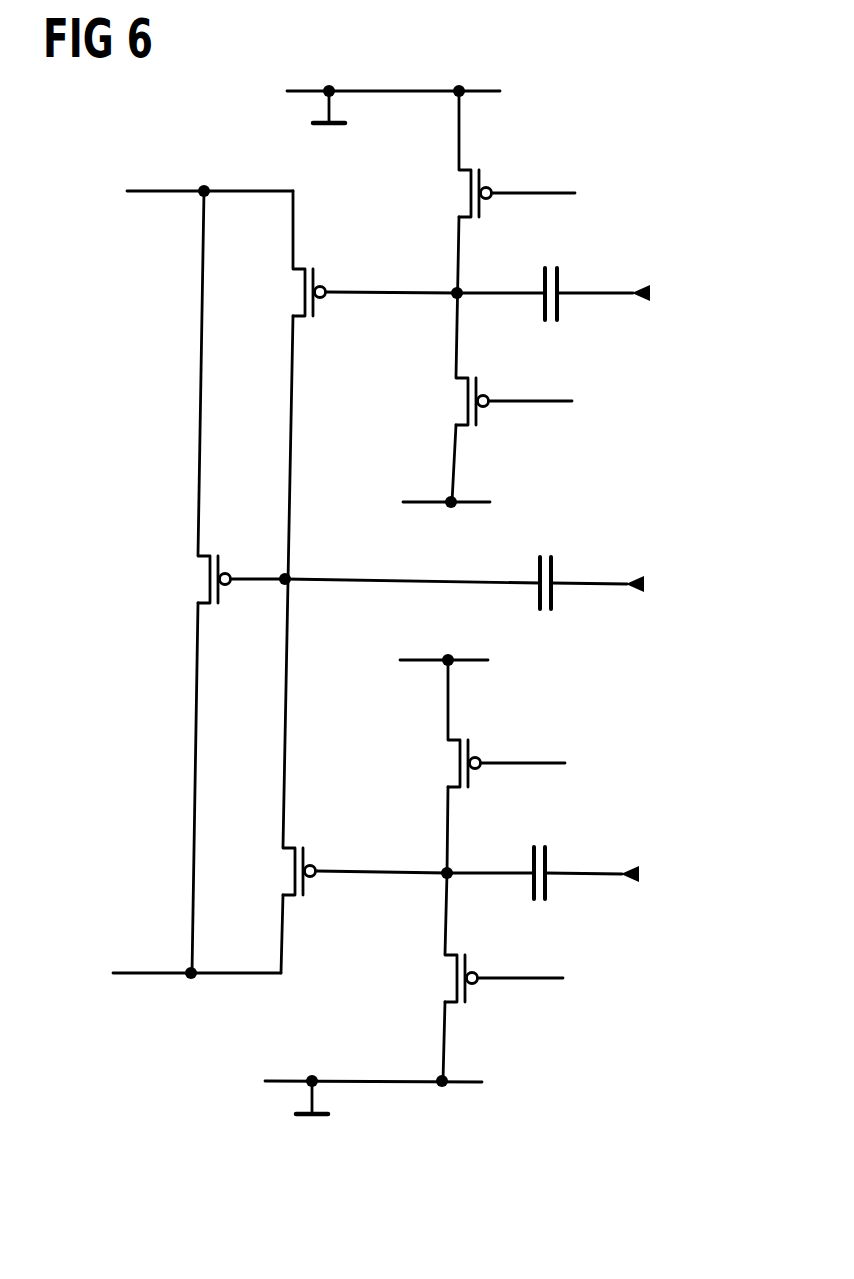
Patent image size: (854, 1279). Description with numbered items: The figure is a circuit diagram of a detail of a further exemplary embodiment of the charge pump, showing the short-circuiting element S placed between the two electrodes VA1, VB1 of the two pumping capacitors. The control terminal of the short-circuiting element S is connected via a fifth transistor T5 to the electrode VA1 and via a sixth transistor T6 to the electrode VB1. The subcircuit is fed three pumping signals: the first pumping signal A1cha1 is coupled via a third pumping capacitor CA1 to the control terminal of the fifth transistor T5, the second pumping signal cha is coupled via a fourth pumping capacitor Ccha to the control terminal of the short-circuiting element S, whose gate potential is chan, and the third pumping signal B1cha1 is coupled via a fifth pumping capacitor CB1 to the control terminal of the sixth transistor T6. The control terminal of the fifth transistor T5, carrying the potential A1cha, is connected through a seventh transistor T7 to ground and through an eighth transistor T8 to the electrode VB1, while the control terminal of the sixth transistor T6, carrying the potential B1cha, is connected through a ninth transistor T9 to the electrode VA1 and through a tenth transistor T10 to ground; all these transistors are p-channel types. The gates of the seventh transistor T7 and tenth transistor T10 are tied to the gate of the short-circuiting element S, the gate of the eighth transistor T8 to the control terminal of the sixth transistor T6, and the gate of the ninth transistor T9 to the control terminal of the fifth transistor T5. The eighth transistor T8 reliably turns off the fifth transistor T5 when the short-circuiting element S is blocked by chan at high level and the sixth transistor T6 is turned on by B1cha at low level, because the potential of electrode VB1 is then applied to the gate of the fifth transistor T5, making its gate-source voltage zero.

The fifth transistor T5 is at (303, 302).
The sixth transistor T6 is at (293, 878).
The seventh transistor T7 is at (469, 200).
The eighth transistor T8 is at (458, 412).
The ninth transistor T9 is at (448, 773).
The tenth transistor T10 is at (455, 992).
The short-circuiting element S is at (208, 592).
The third pumping capacitor CA1 is at (561, 280).
The fourth pumping capacitor Ccha is at (554, 570).
The fifth pumping capacitor CB1 is at (549, 863).
The second electrode of the first pumping capacitor VA1 is at (263, 171).
The second electrode of the second pumping capacitor VB1 is at (471, 502).
The potential at the gate of the short-circuiting element chan is at (570, 175).
The control terminal potential of the fifth transistor A1cha is at (372, 270).
The control terminal potential of the sixth transistor B1cha is at (567, 380).
The first pumping signal A1cha1 is at (661, 297).
The second pumping signal cha is at (626, 580).
The third pumping signal B1cha1 is at (650, 878).